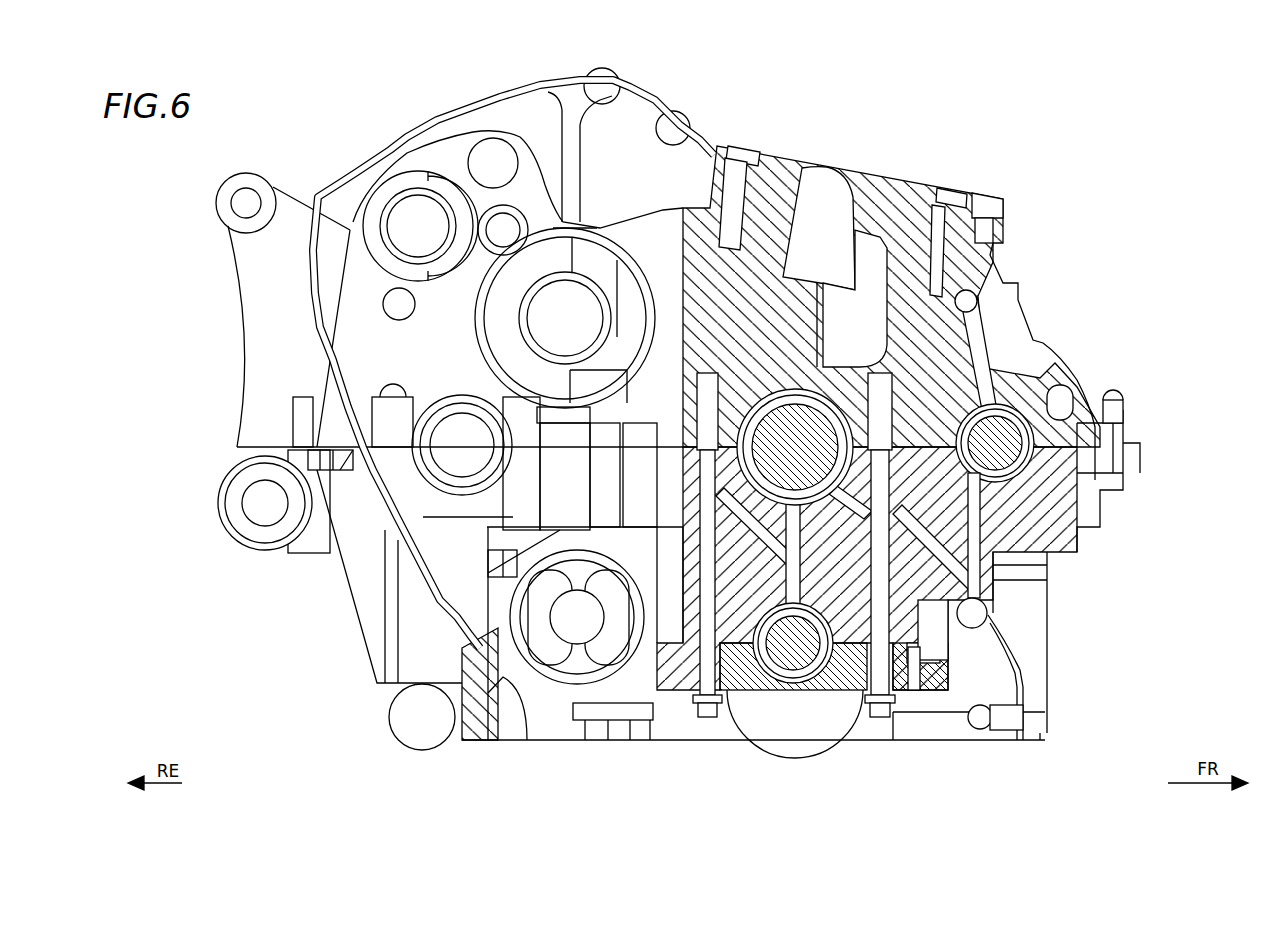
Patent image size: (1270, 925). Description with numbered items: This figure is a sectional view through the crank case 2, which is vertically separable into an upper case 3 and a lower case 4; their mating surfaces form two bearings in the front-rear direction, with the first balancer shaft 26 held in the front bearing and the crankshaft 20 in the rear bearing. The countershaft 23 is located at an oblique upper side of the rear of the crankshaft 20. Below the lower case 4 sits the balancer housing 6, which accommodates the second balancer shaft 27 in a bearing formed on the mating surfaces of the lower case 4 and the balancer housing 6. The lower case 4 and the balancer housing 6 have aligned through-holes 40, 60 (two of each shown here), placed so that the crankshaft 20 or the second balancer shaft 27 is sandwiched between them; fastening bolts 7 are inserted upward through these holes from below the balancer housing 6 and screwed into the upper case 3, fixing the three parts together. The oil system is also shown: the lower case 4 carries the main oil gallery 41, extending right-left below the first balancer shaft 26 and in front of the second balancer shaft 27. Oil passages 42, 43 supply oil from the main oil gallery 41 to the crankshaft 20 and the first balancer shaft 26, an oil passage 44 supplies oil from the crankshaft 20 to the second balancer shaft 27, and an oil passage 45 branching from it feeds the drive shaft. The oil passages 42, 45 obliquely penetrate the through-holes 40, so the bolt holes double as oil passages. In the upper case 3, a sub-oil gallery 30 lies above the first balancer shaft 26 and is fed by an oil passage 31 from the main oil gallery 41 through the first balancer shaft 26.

The crank case 2 is at (1193, 367).
The upper case 3 is at (1052, 418).
The lower case 4 is at (1048, 540).
The balancer housing 6 is at (787, 742).
The fastening bolt 7 is at (708, 647).
The crankshaft 20 is at (820, 285).
The countershaft 23 is at (620, 237).
The first balancer shaft 26 is at (997, 440).
The second balancer shaft 27 is at (795, 650).
The sub-oil gallery 30 is at (975, 292).
The oil passage 31 is at (982, 365).
The through-hole 40 is at (673, 643).
The main oil gallery 41 is at (975, 612).
The oil passage 42 is at (1000, 667).
The oil passage 43 is at (975, 565).
The oil passage 44 is at (793, 540).
The oil passage 45 is at (747, 537).
The through-hole 60 is at (737, 700).